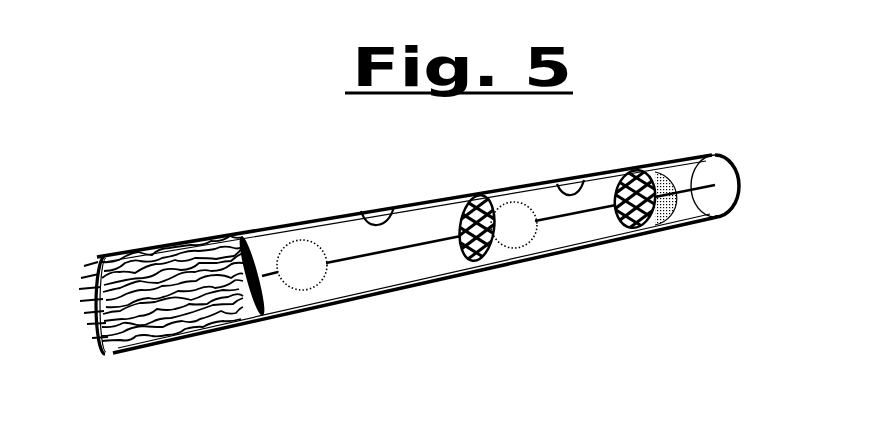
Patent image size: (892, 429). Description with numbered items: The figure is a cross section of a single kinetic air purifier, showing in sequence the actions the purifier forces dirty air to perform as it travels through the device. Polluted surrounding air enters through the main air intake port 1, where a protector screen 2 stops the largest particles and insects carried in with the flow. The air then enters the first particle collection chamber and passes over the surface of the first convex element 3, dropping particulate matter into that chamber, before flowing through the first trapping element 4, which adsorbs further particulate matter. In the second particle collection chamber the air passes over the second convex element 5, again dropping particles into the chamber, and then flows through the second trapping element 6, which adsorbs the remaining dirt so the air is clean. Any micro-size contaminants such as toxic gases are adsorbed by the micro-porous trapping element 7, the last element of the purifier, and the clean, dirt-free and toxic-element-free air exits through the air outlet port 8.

The main air intake port 1 is at (406, 254).
The protector screen 2 is at (488, 234).
The first convex element 3 is at (648, 205).
The first trapping element 4 is at (377, 194).
The second convex element 5 is at (570, 165).
The second trapping element 6 is at (161, 275).
The micro-porous trapping element 7 is at (715, 166).
The air outlet port 8 is at (252, 301).